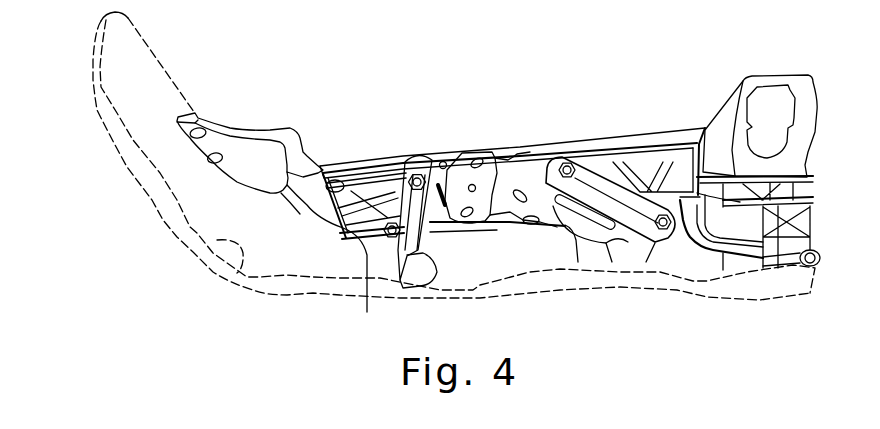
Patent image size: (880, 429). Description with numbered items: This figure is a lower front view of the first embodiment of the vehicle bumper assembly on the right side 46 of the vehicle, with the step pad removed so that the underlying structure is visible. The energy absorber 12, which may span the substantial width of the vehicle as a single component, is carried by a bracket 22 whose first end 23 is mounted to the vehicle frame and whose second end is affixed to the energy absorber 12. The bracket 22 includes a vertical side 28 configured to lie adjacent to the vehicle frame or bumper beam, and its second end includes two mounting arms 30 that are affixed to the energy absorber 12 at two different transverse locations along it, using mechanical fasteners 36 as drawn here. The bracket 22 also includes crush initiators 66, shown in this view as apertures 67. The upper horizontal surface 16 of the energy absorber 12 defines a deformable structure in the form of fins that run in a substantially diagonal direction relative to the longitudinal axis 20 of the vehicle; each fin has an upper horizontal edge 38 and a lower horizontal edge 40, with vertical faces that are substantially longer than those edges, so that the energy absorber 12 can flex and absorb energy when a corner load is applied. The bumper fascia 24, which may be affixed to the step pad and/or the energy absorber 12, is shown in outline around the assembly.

The energy absorber 12 is at (370, 162).
The upper horizontal surface 16 is at (667, 138).
The longitudinal axis 20 is at (480, 200).
The bracket 22 is at (462, 154).
The first end 23 is at (499, 170).
The bumper fascia 24 is at (237, 273).
The vertical side 28 is at (497, 275).
The mounting arms 30 is at (430, 285).
The fastener 36 is at (400, 170).
The upper horizontal edge 38 is at (622, 172).
The lower horizontal edge 40 is at (710, 173).
The right side 46 is at (152, 266).
The crush initiators 66 is at (442, 160).
The apertures 67 is at (530, 194).